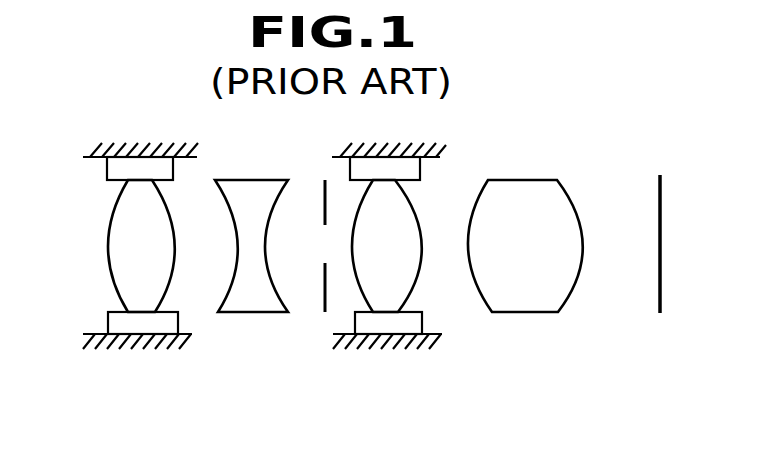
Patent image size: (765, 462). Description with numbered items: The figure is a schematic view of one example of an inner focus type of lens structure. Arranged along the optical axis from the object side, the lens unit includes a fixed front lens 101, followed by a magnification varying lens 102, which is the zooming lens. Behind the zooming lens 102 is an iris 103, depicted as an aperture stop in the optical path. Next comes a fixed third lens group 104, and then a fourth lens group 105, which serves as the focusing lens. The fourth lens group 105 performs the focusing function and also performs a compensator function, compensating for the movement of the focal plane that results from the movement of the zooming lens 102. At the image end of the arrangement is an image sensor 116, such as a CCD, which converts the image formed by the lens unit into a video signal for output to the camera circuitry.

The fixed front lens 101 is at (110, 278).
The magnification varying lens 102 is at (235, 313).
The iris 103 is at (325, 292).
The fixed third lens group 104 is at (420, 272).
The fourth lens group 105 is at (568, 297).
The image sensor 116 is at (657, 195).